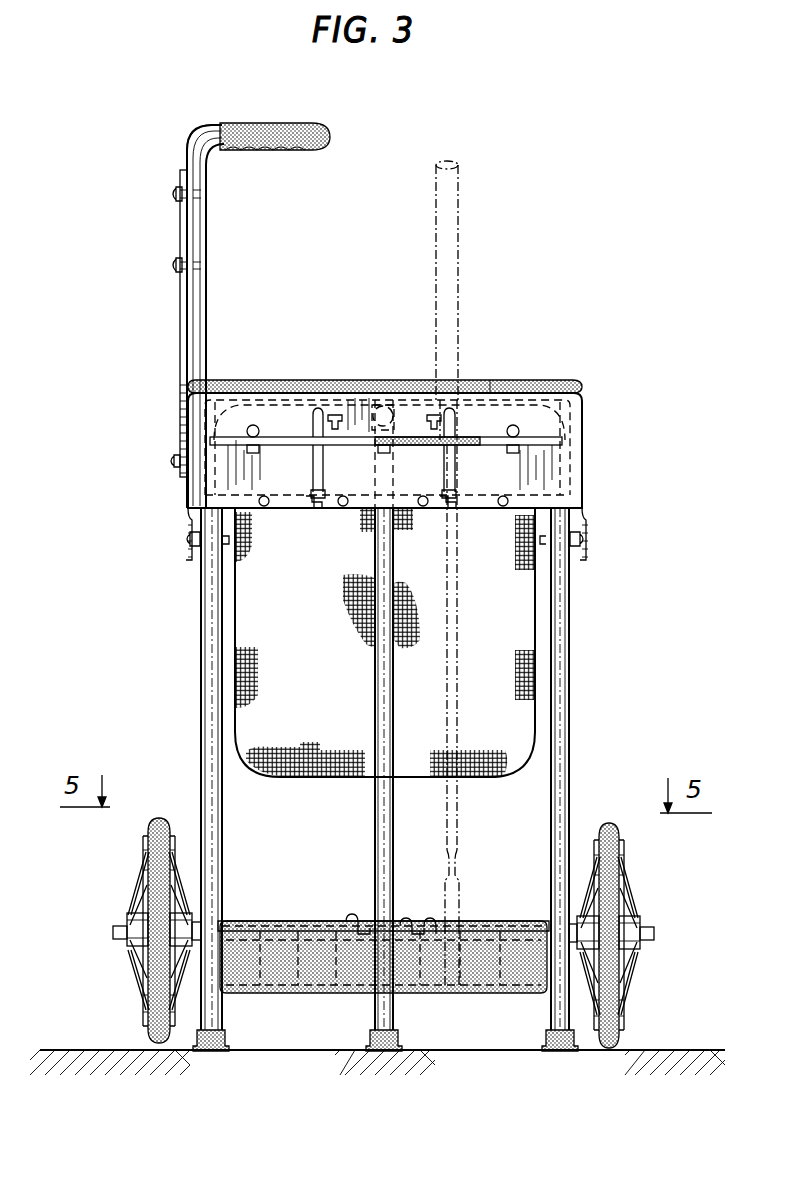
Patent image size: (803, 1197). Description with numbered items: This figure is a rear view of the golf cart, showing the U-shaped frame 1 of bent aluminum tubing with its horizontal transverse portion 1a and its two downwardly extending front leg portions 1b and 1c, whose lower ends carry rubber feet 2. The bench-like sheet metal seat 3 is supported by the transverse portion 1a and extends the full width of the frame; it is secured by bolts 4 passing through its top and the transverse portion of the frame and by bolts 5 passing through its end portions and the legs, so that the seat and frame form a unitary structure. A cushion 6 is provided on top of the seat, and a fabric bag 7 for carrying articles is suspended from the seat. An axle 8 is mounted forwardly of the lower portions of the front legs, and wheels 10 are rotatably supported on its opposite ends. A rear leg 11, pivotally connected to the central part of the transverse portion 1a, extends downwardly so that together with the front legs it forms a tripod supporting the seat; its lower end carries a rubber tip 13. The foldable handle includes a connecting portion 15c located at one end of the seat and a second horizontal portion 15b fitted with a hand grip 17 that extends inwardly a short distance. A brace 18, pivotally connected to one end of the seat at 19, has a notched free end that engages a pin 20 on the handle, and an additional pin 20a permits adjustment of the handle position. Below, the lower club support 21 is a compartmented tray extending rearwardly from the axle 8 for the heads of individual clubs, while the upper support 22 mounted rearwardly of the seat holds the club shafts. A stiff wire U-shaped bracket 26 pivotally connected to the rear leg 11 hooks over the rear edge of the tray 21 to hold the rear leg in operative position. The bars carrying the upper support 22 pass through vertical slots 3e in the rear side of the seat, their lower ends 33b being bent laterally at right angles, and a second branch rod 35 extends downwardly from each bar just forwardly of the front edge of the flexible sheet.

The frame 1 is at (200, 652).
The transverse portion 1a is at (258, 392).
The front leg portion 1b is at (205, 692).
The front leg portion 1c is at (569, 728).
The rubber feet 2 is at (226, 1042).
The seat 3 is at (535, 400).
The vertical slots 3e is at (313, 428).
The bolts 4 is at (348, 388).
The bolts 5 is at (188, 540).
The cushion 6 is at (489, 392).
The fabric bag 7 is at (280, 778).
The axle 8 is at (113, 932).
The wheels 10 is at (148, 840).
The rear leg 11 is at (375, 850).
The rubber tip 13 is at (400, 1046).
The second horizontal portion 15b is at (235, 100).
The connecting portion 15c is at (212, 292).
The hand grip 17 is at (300, 96).
The brace 18 is at (182, 292).
The pivot connection 19 is at (174, 461).
The pin 20 is at (176, 195).
The additional pin 20a is at (178, 260).
The lower support 21 is at (290, 994).
The upper support 22 is at (562, 440).
The U-shaped bracket 26 is at (349, 920).
The lower ends 33b is at (306, 508).
The second branch rod 35 is at (313, 468).